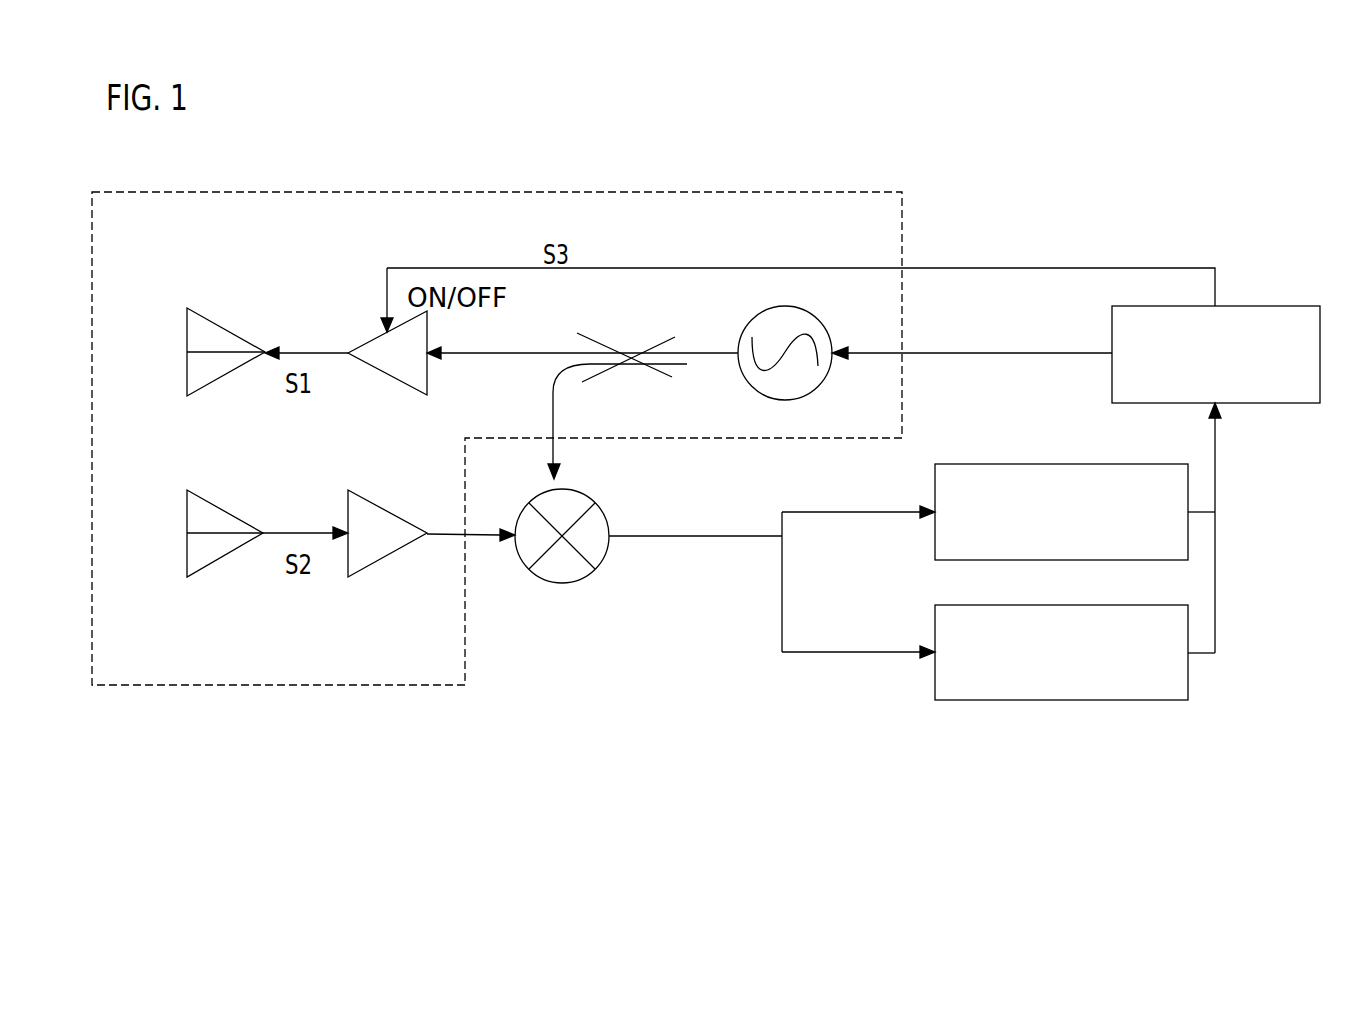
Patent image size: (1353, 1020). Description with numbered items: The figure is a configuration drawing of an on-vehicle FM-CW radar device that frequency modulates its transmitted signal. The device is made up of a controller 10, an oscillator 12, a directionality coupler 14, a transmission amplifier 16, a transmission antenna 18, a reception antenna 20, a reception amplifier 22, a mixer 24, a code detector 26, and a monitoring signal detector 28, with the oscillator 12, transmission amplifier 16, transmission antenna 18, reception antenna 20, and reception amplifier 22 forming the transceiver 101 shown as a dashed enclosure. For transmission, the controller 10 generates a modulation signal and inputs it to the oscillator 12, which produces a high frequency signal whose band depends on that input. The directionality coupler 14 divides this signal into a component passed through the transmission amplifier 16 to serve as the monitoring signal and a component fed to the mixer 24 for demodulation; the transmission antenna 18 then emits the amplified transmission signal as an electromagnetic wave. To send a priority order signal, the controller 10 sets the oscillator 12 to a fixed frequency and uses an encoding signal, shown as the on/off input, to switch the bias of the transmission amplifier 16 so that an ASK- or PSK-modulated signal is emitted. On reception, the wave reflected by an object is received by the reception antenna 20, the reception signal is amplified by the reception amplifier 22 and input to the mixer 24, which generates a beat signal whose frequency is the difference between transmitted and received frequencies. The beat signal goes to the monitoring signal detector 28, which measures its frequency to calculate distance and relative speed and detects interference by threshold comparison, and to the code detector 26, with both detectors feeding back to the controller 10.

The controller 10 is at (1216, 354).
The oscillator 12 is at (787, 387).
The directionality coupler 14 is at (618, 382).
The transmission amplifier 16 is at (367, 347).
The transmission antenna 18 is at (183, 325).
The reception antenna 20 is at (182, 502).
The reception amplifier 22 is at (348, 505).
The mixer 24 is at (543, 577).
The code detector 26 is at (1061, 512).
The monitoring signal detector 28 is at (1061, 652).
The transceiver 101 is at (288, 687).